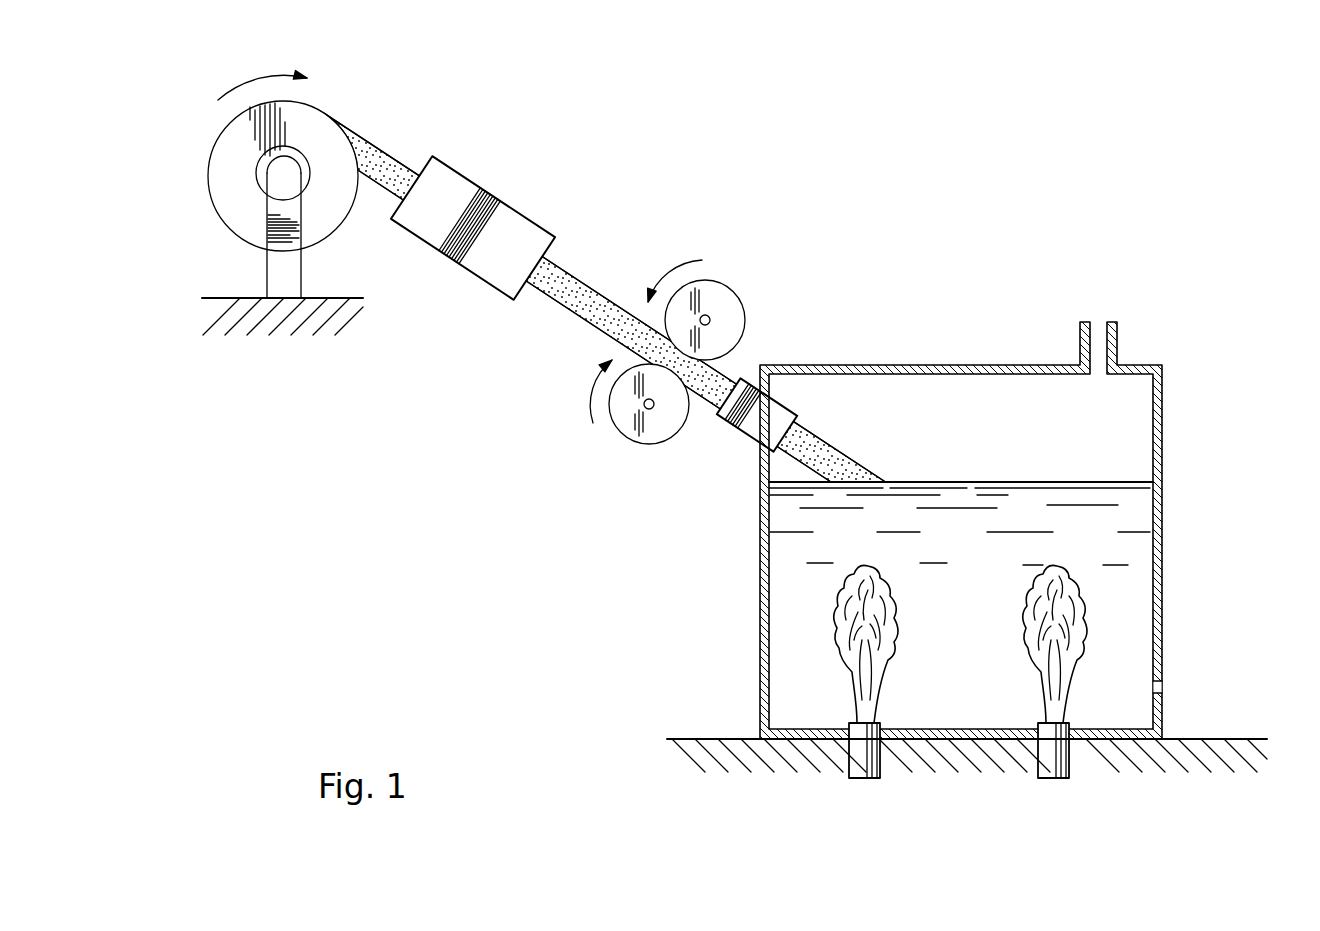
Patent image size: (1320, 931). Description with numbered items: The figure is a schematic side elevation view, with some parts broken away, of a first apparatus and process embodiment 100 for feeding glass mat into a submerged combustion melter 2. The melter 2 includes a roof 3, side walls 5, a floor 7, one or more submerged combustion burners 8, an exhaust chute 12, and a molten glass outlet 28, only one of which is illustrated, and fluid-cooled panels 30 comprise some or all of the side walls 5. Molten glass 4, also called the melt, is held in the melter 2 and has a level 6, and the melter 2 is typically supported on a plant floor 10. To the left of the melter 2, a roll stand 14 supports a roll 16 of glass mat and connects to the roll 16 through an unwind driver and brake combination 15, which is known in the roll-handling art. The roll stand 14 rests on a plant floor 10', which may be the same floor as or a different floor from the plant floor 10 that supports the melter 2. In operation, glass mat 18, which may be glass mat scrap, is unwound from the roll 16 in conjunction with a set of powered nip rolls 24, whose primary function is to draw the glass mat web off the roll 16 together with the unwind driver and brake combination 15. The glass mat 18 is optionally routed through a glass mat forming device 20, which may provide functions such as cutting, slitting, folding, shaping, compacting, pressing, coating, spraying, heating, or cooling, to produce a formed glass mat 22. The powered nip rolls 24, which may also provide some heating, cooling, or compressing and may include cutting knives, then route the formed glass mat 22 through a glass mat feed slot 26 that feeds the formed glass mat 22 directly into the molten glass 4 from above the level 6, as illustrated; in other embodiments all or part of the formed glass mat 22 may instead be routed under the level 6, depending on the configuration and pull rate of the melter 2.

The embodiment 100 is at (1090, 165).
The melter 2 is at (1182, 572).
The roof 3 is at (875, 365).
The molten glass 4 is at (970, 627).
The side walls 5 is at (770, 684).
The level 6 is at (977, 482).
The floor 7 is at (1000, 728).
The submerged combustion burners 8 is at (860, 772).
The plant floor 10 is at (977, 735).
The plant floor 10' is at (304, 289).
The exhaust chute 12 is at (1118, 335).
The roll stand 14 is at (267, 273).
The unwind driver and brake combination 15 is at (255, 178).
The roll of glass mat 16 is at (227, 150).
The glass mat 18 is at (373, 142).
The glass mat forming device 20 is at (455, 163).
The formed glass mat 22 is at (580, 280).
The powered nip rolls 24 is at (739, 299).
The glass mat feed slot 26 is at (727, 423).
The molten glass outlet 28 is at (1162, 689).
The fluid-cooled panels 30 is at (1162, 518).